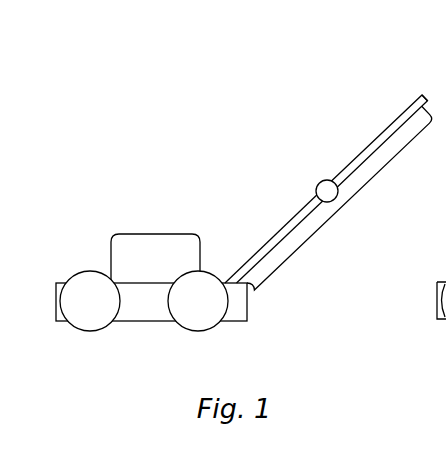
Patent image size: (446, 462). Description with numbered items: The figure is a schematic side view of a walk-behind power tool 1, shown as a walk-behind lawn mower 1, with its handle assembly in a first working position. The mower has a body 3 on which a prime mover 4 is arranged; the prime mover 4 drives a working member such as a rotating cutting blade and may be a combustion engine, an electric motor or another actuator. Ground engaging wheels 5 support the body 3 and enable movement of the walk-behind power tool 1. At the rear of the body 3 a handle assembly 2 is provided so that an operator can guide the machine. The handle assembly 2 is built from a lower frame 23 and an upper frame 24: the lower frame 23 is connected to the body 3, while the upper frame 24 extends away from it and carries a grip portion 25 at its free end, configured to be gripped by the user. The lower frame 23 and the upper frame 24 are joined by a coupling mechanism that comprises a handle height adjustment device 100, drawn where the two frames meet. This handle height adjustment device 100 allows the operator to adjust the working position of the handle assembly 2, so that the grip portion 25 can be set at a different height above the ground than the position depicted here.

The walk-behind power tool 1 is at (223, 106).
The handle assembly 2 is at (353, 201).
The body 3 is at (151, 302).
The prime mover 4 is at (155, 258).
The ground engaging wheels 5 is at (144, 301).
The lower frame 23 is at (291, 219).
The upper frame 24 is at (376, 138).
The grip portion 25 is at (415, 102).
The handle height adjustment device 100 is at (326, 180).